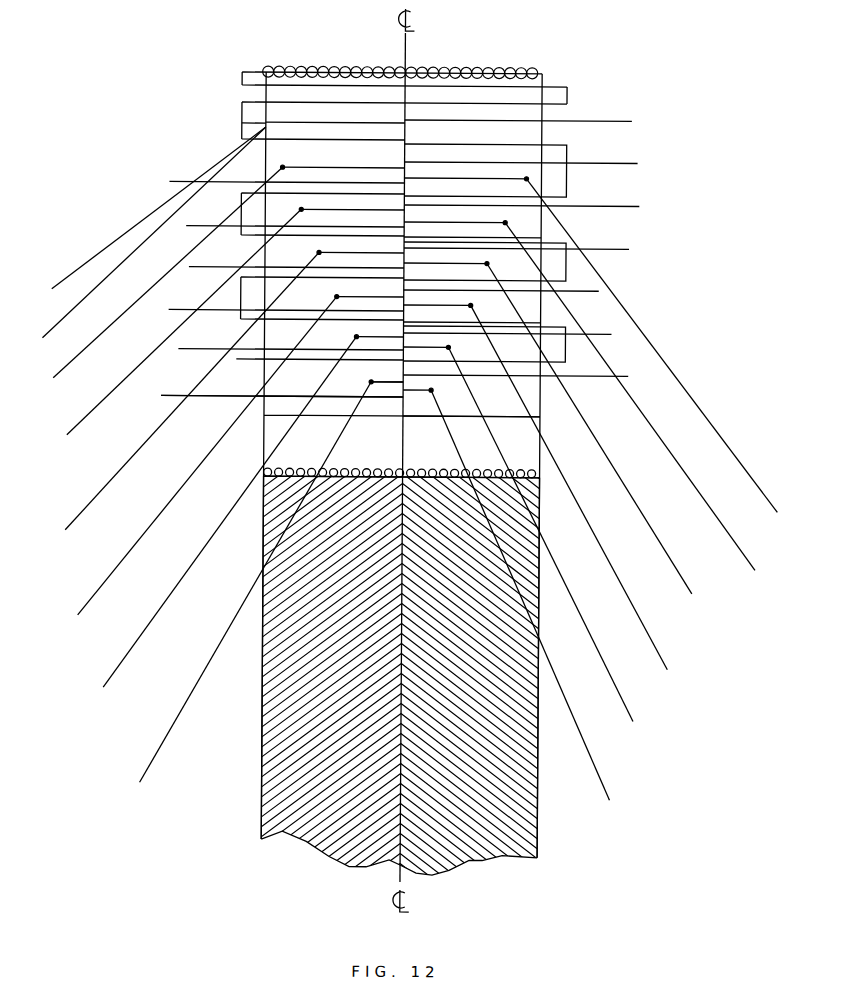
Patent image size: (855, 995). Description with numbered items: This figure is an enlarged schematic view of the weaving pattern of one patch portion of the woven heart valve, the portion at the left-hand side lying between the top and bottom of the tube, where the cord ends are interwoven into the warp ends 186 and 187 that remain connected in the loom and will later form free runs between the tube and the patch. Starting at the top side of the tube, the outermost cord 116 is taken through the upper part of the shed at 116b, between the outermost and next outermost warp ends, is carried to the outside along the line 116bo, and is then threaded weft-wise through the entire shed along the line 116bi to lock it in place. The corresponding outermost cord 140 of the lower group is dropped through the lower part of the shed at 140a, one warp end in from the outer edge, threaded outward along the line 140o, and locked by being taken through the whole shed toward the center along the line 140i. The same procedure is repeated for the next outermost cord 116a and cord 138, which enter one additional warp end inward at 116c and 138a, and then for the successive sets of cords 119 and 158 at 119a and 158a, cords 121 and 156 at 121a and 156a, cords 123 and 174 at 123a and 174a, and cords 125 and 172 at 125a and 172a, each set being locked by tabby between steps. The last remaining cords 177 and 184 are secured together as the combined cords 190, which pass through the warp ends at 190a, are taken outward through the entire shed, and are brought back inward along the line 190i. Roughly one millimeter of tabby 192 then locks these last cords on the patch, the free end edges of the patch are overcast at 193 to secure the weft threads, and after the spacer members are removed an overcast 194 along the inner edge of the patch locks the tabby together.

The cord 116 is at (603, 775).
The cord 116a is at (627, 700).
The shed entry point of cord 116 116b is at (434, 390).
The inward threading line of cord 116 116bi is at (383, 400).
The outward threading line of cord 116 116bo is at (424, 400).
The shed entry point of cord 116a 116c is at (451, 347).
The cord 119 is at (662, 652).
The shed entry point of cord 119 119a is at (473, 305).
The cord 121 is at (686, 578).
The shed entry point of cord 121 121a is at (489, 263).
The cord 123 is at (738, 541).
The shed entry point of cord 123 123a is at (507, 222).
The cord 125 is at (752, 473).
The shed entry point of cord 125 125a is at (528, 178).
The cord 138 is at (119, 672).
The shed entry point of cord 138 138a is at (358, 337).
The cord 140 is at (158, 760).
The shed entry point of cord 140 140a is at (373, 382).
The outward threading line of cord 140 140o is at (385, 379).
The inward threading line of cord 140 140i is at (493, 375).
The cord 156 is at (81, 518).
The shed entry point of cord 156 156a is at (320, 253).
The cord 158 is at (97, 597).
The shed entry point of cord 158 158a is at (338, 297).
The cord 172 is at (68, 368).
The shed entry point of cord 172 172a is at (283, 168).
The cord 174 is at (87, 420).
The shed entry point of cord 174 174a is at (302, 210).
The cord 177 is at (50, 334).
The cord 184 is at (58, 283).
The warp ends 186 is at (518, 825).
The warp ends 187 is at (293, 792).
The combined cords 190 is at (242, 124).
The shed entry point of combined cords 190 190a is at (326, 124).
The inward threading line of combined cords 190 190i is at (460, 115).
The tabby 192 is at (577, 92).
The overcast 193 is at (482, 68).
The overcast 194 is at (520, 473).